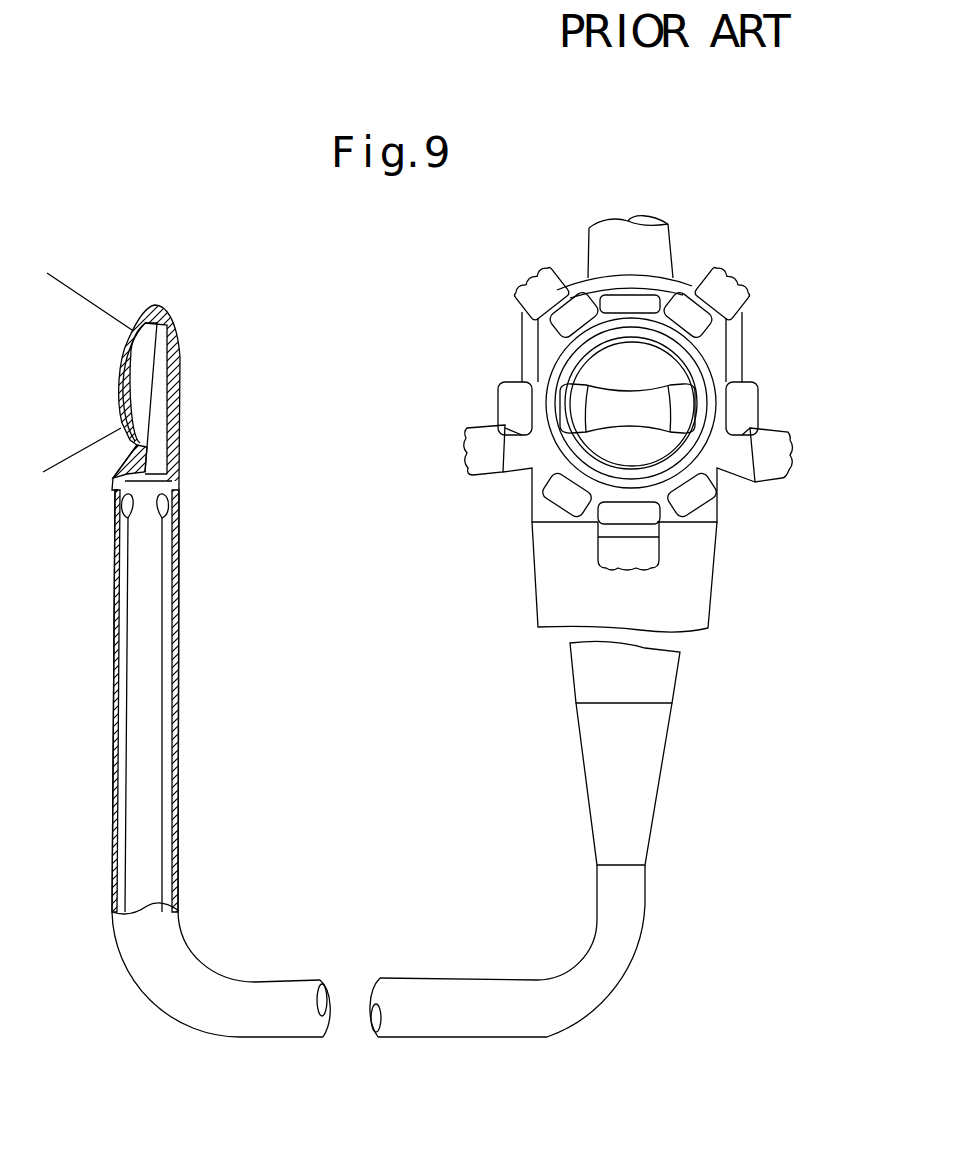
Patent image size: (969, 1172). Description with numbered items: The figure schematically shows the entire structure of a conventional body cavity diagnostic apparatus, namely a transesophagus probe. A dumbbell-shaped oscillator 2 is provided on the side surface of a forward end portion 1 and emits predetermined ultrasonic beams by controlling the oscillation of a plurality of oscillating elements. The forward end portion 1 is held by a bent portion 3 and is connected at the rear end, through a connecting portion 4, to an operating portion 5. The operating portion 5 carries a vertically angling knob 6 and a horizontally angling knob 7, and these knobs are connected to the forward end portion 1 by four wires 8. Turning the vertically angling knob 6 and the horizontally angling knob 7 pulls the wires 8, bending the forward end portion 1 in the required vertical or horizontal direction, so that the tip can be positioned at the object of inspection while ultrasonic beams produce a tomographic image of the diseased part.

The forward end portion 1 is at (180, 375).
The dumbbell-shaped oscillator 2 is at (132, 383).
The bent portion 3 is at (178, 668).
The connecting portion 4 is at (700, 650).
The operating portion 5 is at (537, 580).
The vertically angling knob 6 is at (470, 446).
The horizontally angling knob 7 is at (517, 378).
The wires 8 is at (130, 588).